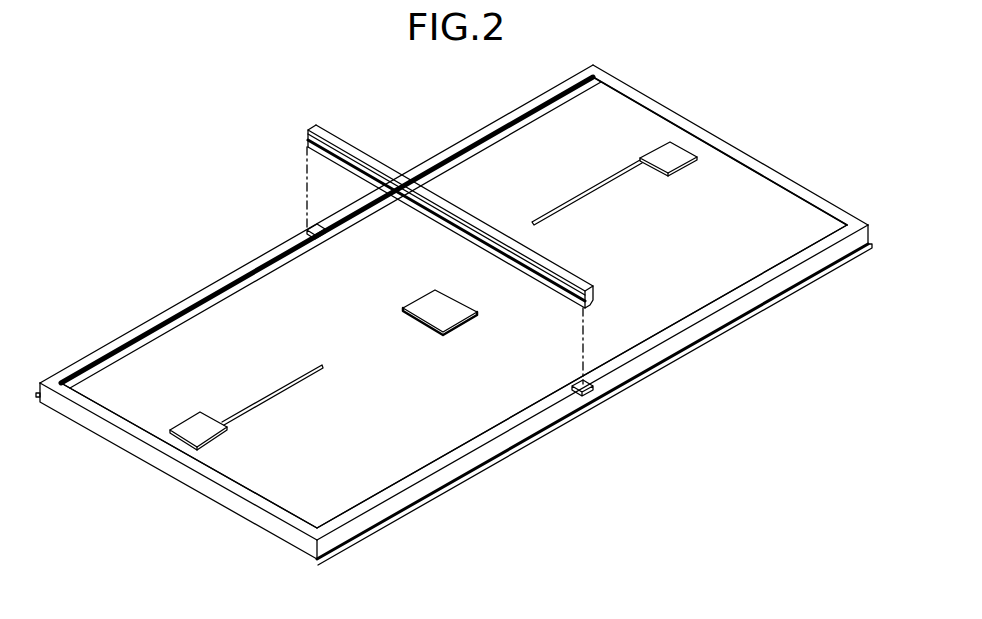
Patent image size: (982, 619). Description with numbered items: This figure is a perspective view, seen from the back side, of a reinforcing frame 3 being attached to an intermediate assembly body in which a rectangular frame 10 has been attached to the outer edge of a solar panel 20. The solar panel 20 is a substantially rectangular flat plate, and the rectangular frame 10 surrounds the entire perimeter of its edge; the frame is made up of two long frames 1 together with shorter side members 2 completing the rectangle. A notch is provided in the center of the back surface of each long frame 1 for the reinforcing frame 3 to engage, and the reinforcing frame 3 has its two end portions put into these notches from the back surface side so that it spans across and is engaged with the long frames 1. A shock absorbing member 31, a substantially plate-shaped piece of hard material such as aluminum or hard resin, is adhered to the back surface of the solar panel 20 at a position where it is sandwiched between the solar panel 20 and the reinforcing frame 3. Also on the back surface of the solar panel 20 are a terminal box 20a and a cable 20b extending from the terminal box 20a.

The long frame 1 is at (187, 297).
The short side rail of frame 2 is at (723, 148).
The reinforcing frame 3 is at (470, 213).
The rectangular frame 10 is at (463, 140).
The solar panel 20 is at (360, 493).
The terminal box 20a is at (672, 148).
The cable 20b is at (573, 197).
The shock absorbing member 31 is at (421, 302).